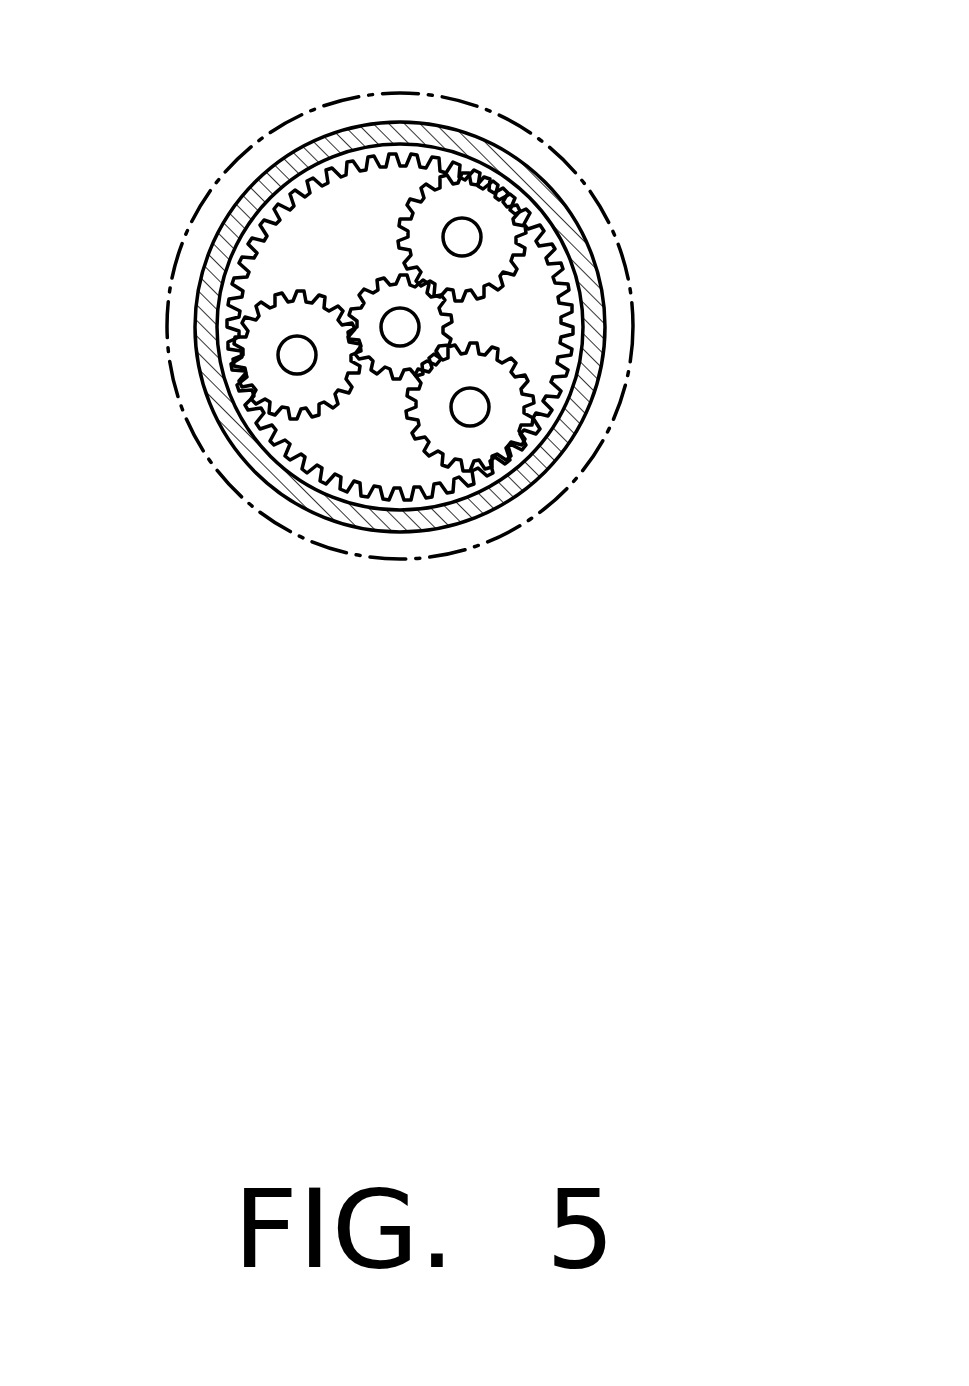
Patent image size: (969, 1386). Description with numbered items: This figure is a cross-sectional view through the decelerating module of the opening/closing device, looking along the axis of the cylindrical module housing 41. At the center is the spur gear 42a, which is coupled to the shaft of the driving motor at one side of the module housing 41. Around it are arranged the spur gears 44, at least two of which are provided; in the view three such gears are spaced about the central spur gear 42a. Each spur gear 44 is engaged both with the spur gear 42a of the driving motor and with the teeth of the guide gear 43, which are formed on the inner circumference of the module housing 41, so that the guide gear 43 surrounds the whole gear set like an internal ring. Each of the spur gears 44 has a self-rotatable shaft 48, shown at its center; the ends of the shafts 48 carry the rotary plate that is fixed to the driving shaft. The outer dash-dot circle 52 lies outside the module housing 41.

The module housing 41 is at (585, 443).
The spur gear 42a is at (381, 350).
The guide gear 43 is at (584, 283).
The spur gears 44 is at (502, 245).
The self-rotatable shaft 48 is at (462, 237).
The outer cover tube 52 is at (634, 378).